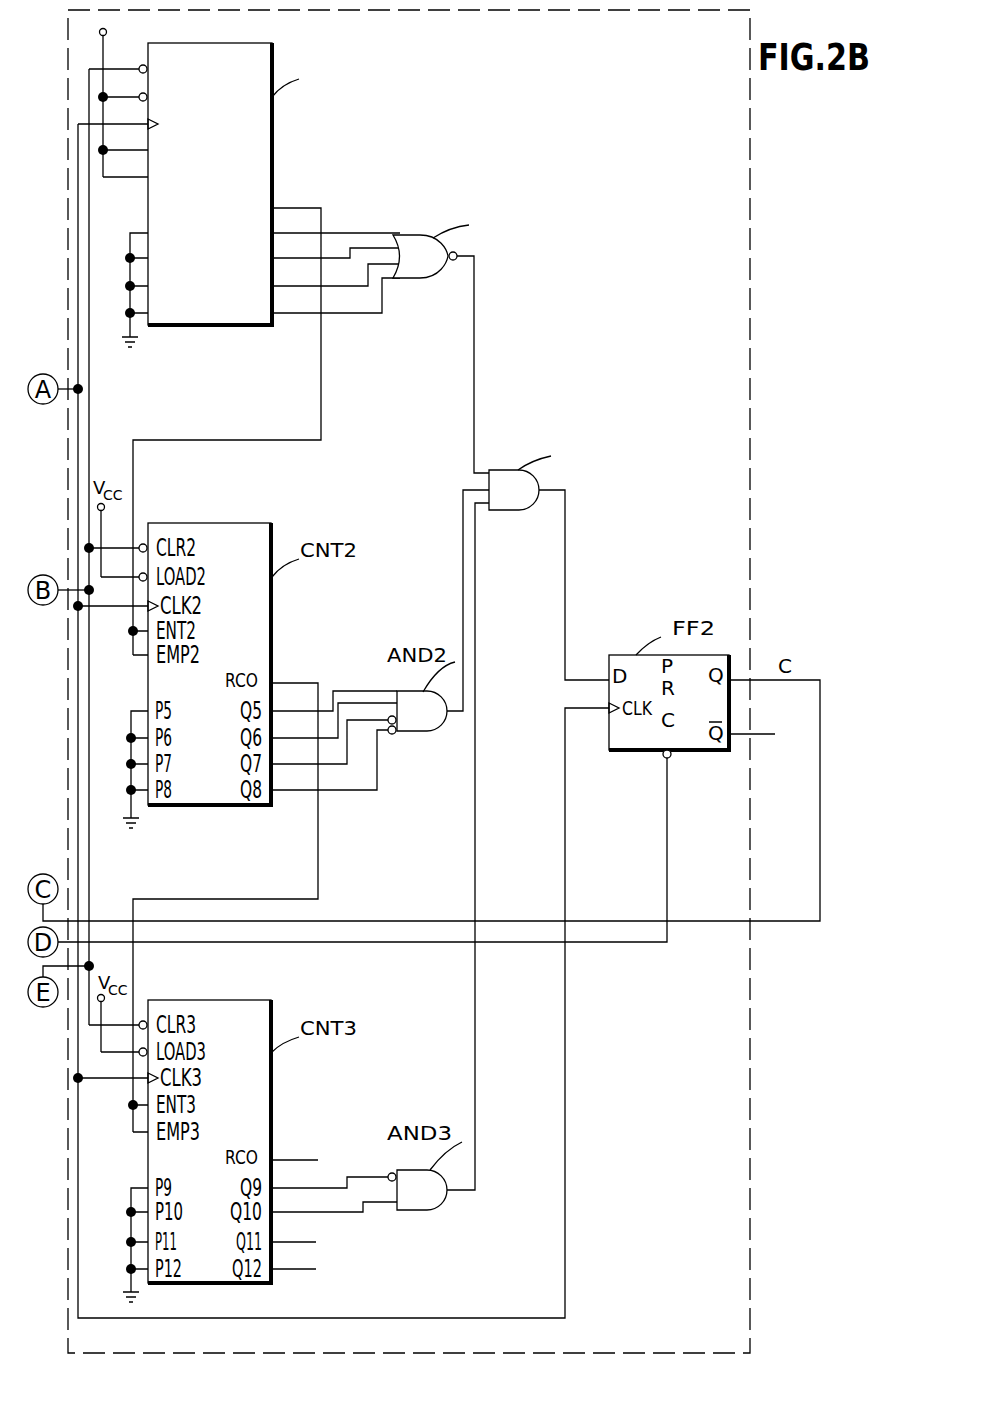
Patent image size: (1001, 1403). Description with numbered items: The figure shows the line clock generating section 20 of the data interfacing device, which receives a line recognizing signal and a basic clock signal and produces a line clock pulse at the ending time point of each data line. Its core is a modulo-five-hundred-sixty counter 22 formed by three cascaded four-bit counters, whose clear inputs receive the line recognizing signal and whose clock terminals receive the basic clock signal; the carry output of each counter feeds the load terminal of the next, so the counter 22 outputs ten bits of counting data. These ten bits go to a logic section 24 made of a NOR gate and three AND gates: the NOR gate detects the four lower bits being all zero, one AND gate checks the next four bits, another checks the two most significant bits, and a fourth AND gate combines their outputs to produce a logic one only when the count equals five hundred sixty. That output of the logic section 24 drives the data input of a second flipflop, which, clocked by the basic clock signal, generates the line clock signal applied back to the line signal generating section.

The line clock generating section 20 is at (750, 402).
The modulo-560 counter 22 is at (360, 187).
The logic section 24 is at (492, 423).